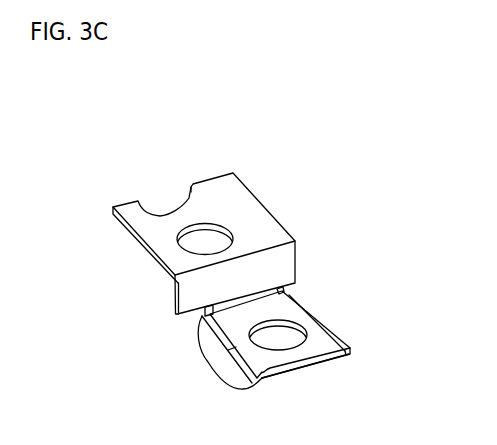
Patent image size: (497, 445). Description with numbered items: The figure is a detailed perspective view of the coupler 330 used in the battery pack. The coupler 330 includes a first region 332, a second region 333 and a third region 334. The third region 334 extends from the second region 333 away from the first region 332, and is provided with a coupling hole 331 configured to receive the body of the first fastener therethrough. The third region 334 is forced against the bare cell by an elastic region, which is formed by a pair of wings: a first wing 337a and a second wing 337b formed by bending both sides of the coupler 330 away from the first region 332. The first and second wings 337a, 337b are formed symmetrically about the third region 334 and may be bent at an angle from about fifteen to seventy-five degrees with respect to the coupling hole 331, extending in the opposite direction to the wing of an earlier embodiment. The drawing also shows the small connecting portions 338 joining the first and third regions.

The coupler 330 is at (84, 94).
The coupling hole 331 is at (279, 334).
The first region 332 is at (248, 210).
The second region 333 is at (298, 250).
The third region 334 is at (300, 324).
The first wing 337a is at (220, 357).
The second wing 337b is at (340, 331).
The connecting portions 338 is at (279, 289).